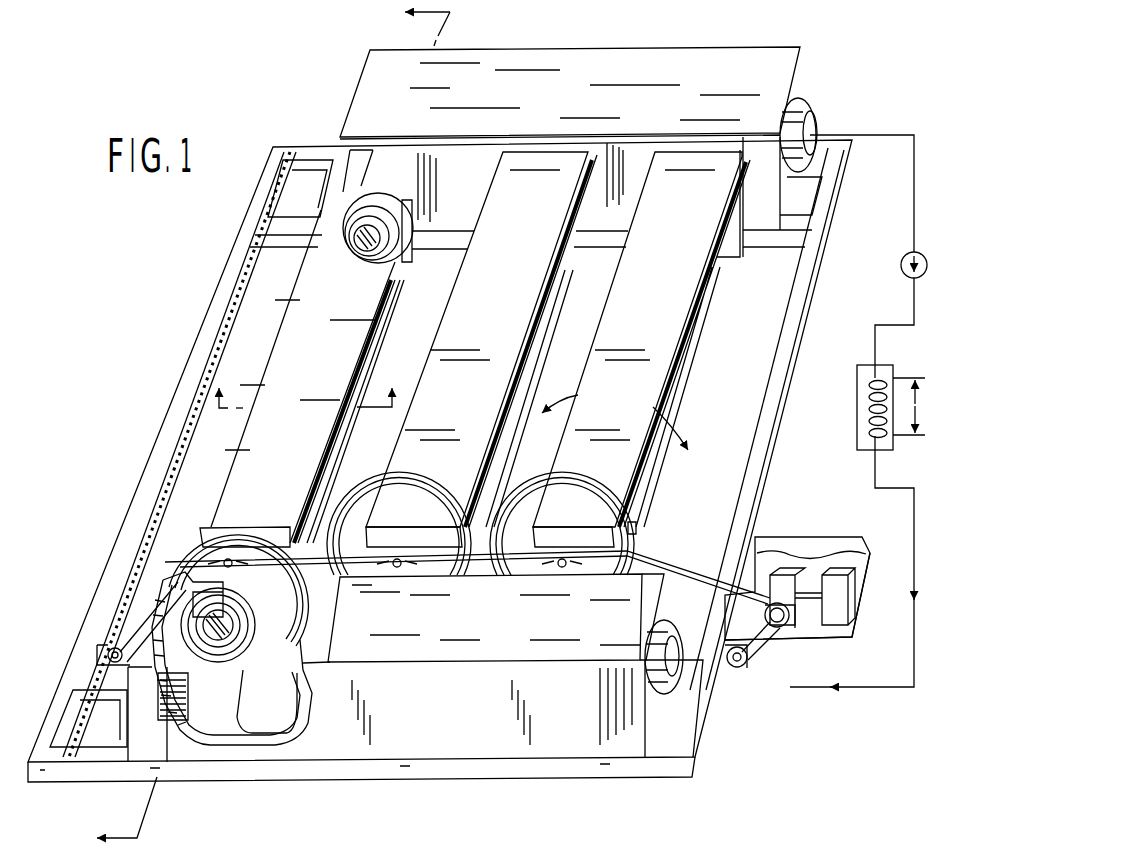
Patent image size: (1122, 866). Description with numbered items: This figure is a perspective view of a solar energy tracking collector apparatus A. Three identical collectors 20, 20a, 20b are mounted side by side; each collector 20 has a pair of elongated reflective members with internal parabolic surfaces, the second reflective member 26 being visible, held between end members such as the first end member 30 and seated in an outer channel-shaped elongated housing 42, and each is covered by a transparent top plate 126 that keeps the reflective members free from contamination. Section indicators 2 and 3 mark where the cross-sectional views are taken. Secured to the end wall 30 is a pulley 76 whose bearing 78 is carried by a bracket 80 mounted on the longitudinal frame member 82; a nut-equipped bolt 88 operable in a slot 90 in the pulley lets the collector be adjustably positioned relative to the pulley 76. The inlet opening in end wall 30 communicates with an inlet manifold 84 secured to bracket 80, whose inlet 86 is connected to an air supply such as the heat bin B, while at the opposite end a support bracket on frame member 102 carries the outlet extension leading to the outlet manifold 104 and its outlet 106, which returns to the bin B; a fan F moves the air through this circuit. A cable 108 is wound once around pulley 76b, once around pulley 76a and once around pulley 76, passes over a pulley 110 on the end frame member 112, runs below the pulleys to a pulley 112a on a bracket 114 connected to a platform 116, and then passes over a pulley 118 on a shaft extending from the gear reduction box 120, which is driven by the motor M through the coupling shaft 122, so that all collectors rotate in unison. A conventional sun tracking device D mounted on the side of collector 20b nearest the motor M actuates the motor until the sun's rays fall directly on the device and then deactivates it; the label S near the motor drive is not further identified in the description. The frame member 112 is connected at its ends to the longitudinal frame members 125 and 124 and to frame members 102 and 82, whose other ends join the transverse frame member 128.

The collector 20 is at (270, 315).
The collector 20a is at (442, 307).
The collector 20b is at (600, 307).
The second elongated reflective member 26 is at (325, 425).
The first end member 30 is at (203, 537).
The outer channel-shaped elongated housing 42 is at (330, 500).
The pulley 76 is at (247, 540).
The pulley 76a is at (398, 533).
The pulley 76b is at (580, 533).
The bearing 78 is at (270, 598).
The bracket 80 is at (190, 593).
The longitudinal frame member 82 is at (110, 702).
The inlet manifold 84 is at (450, 712).
The inlet 86 is at (663, 637).
The nut-equipped bolt 88 is at (235, 557).
The slot 90 is at (255, 582).
The frame member 102 is at (292, 243).
The outlet manifold 104 is at (650, 60).
The outlet 106 is at (800, 100).
The cable 108 is at (330, 548).
The pulley 110 is at (98, 660).
The end frame member 112 is at (127, 540).
The pulley 112a is at (733, 662).
The bracket 114 is at (722, 622).
The platform 116 is at (807, 627).
The pulley 118 is at (782, 623).
The gear reduction box 120 is at (786, 575).
The coupling shaft 122 is at (812, 593).
The longitudinal frame member 124 is at (303, 152).
The longitudinal frame member 125 is at (78, 773).
The transparent top plate 126 is at (360, 312).
The transverse frame member 128 is at (787, 402).
The section line 2- 2 is at (312, 382).
The section line 3- 3 is at (263, 423).
The apparatus A is at (137, 455).
The heat bin B is at (863, 437).
The sun tracking device D is at (637, 523).
The fan F is at (901, 270).
The motor M is at (833, 578).
The signal line S is at (795, 690).